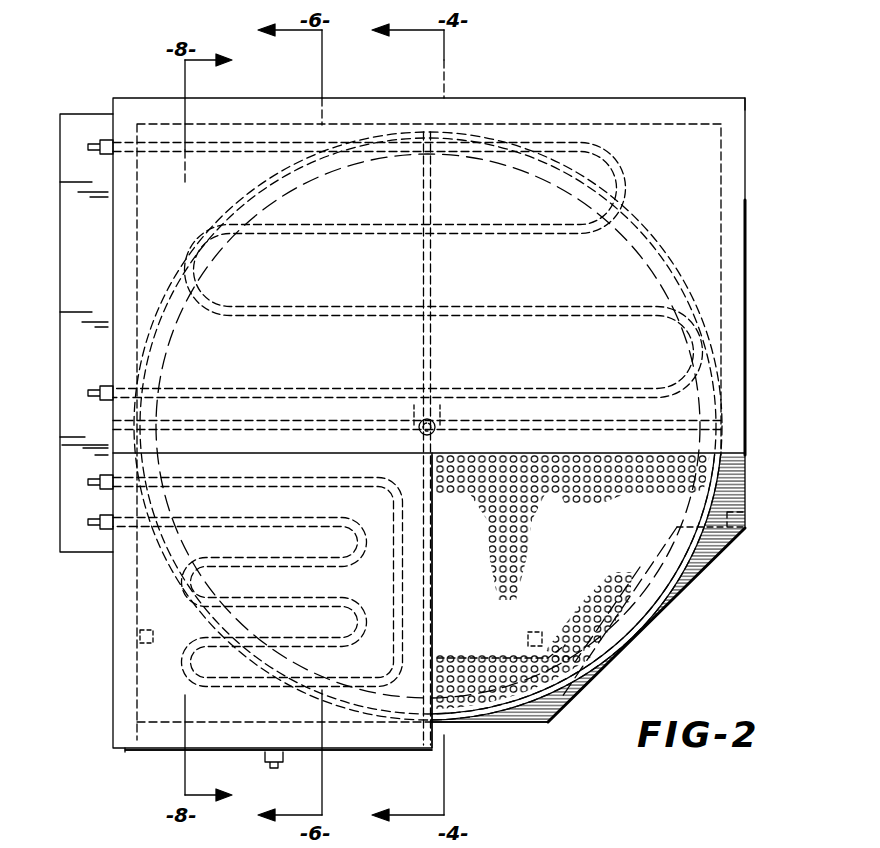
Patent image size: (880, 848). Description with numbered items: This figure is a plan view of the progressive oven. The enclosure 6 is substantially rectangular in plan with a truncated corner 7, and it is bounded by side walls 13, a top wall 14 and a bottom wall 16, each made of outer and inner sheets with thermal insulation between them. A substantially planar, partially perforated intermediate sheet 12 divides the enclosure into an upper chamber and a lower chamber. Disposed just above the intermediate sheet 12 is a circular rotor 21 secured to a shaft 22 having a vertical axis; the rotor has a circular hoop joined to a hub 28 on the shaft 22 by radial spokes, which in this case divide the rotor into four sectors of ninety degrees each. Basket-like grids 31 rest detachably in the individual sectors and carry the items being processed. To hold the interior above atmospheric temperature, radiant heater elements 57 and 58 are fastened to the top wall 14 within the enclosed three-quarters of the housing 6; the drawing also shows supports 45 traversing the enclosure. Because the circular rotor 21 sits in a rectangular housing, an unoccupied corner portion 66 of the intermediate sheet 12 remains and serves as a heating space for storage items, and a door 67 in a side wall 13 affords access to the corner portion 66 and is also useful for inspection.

The enclosure 6 is at (750, 95).
The truncated corner 7 is at (650, 646).
The intermediate sheet 12 is at (727, 497).
The side walls 13 is at (510, 102).
The top wall 14 is at (700, 190).
The bottom wall 16 is at (640, 567).
The rotor 21 is at (672, 255).
The shaft 22 is at (437, 420).
The hub 28 is at (415, 414).
The basket-like grids 31 is at (430, 589).
The support rod 45 is at (432, 296).
The radiant heater element 57 is at (372, 246).
The radiant heater element 58 is at (260, 517).
The corner portion 66 is at (378, 588).
The door 67 is at (156, 750).